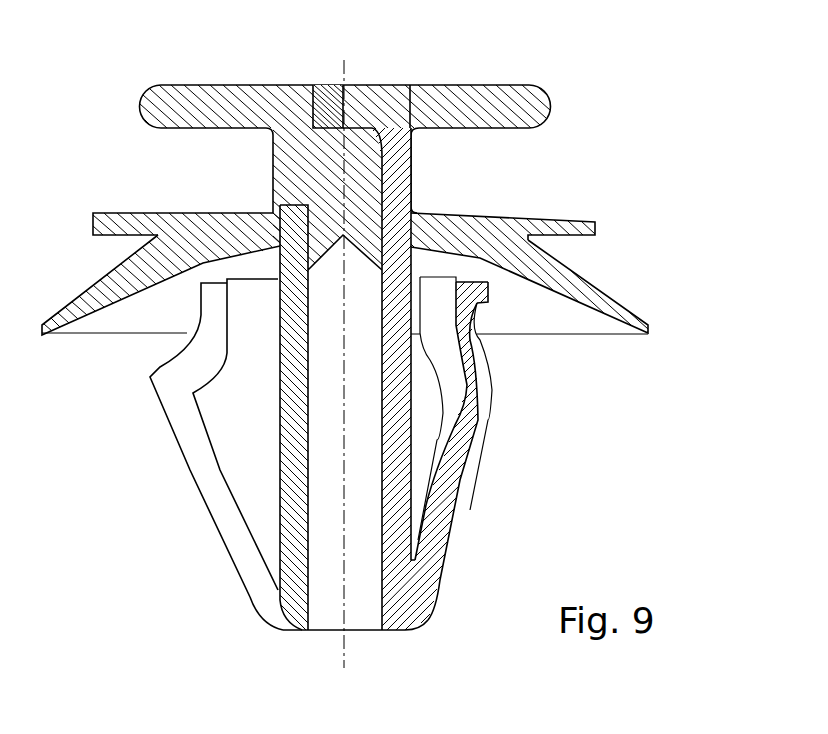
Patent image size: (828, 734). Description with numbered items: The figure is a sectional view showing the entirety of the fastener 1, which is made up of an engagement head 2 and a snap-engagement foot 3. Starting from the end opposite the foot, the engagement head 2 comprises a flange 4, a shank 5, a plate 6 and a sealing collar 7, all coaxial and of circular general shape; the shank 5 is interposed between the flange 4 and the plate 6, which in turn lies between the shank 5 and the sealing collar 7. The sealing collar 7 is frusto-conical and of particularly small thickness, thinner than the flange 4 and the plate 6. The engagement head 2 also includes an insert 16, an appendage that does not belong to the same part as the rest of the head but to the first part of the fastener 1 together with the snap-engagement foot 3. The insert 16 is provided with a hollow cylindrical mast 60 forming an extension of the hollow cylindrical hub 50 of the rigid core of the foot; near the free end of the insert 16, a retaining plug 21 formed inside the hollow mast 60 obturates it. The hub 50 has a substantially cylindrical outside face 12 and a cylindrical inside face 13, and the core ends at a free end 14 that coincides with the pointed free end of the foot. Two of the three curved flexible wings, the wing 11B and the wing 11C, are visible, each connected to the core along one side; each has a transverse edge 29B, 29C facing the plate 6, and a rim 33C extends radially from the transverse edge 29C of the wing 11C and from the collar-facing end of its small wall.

The fastener 1 is at (714, 128).
The engagement head 2 is at (566, 76).
The snap-engagement foot 3 is at (630, 444).
The flange 4 is at (473, 87).
The shank 5 is at (273, 160).
The plate 6 is at (108, 213).
The sealing collar 7 is at (72, 302).
The curved flexible wing 11B is at (230, 467).
The curved flexible wing 11C is at (455, 440).
The outside face 12 is at (278, 378).
The inside face 13 is at (383, 457).
The free end 14 is at (307, 632).
The insert 16 is at (380, 87).
The retaining plug 21 is at (333, 87).
The transverse edge 29B is at (245, 273).
The transverse edge 29C is at (440, 277).
The rim 33C is at (488, 287).
The hollow cylindrical hub 50 is at (315, 571).
The hollow cylindrical mast 60 is at (412, 148).